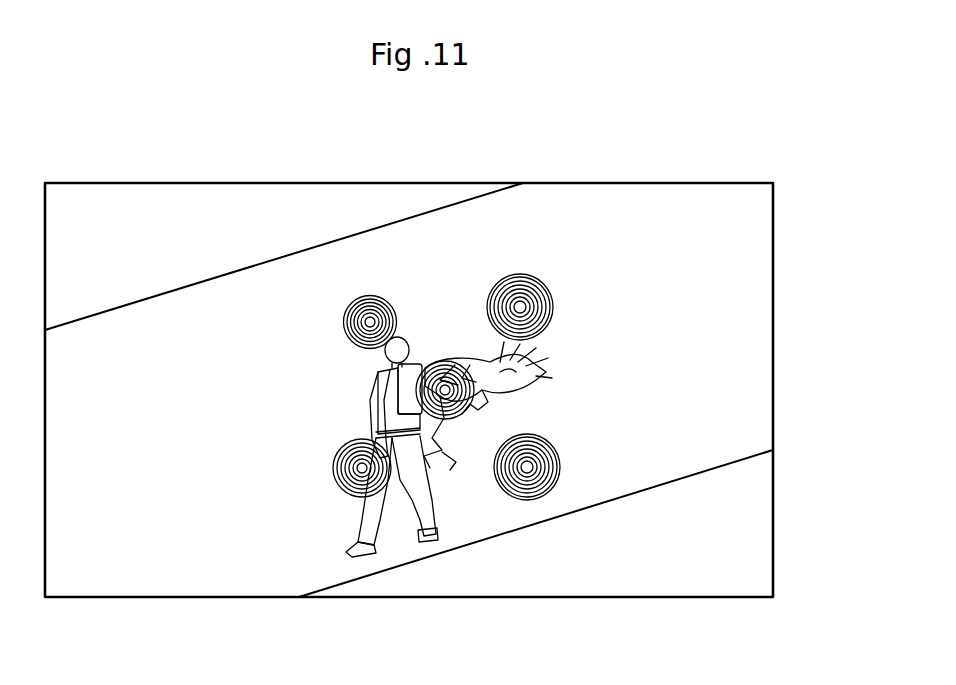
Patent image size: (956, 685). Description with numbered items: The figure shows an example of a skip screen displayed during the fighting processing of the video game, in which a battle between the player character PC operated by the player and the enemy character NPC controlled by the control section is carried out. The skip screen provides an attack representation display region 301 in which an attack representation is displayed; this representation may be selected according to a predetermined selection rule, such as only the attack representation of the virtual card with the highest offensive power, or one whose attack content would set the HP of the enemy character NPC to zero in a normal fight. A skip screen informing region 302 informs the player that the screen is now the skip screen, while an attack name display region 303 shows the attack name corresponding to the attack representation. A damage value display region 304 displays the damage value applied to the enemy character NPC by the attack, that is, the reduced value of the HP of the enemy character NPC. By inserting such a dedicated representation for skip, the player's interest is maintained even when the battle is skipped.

The attack representation display region 301 is at (720, 228).
The skip screen informing region 302 is at (105, 217).
The attack name display region 303 is at (257, 216).
The damage value display region 304 is at (723, 560).
The enemy character NPC is at (540, 371).
The player character PC is at (345, 558).